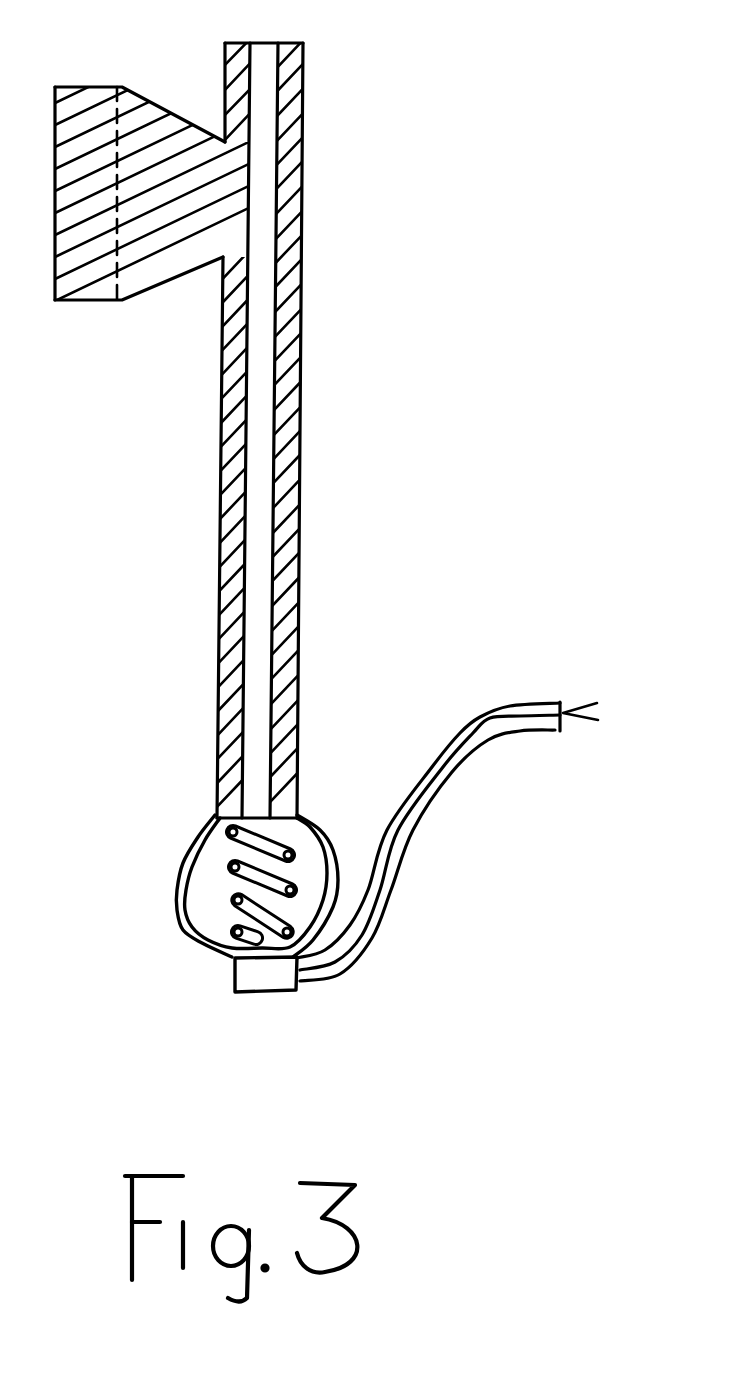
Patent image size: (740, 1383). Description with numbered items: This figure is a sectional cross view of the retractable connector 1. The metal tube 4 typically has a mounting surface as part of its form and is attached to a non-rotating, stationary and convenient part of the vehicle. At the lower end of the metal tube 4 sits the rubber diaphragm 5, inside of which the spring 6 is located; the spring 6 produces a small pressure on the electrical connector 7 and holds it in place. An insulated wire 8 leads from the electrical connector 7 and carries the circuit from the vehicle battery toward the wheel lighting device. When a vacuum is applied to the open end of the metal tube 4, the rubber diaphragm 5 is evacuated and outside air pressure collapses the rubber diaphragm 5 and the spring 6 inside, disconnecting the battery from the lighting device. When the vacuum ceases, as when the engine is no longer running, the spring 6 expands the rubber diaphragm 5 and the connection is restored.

The retractable connector 1 is at (336, 496).
The metal tube 4 is at (305, 80).
The rubber diaphragm 5 is at (192, 842).
The spring 6 is at (235, 878).
The electrical connector 7 is at (250, 975).
The insulated wire 8 is at (418, 817).